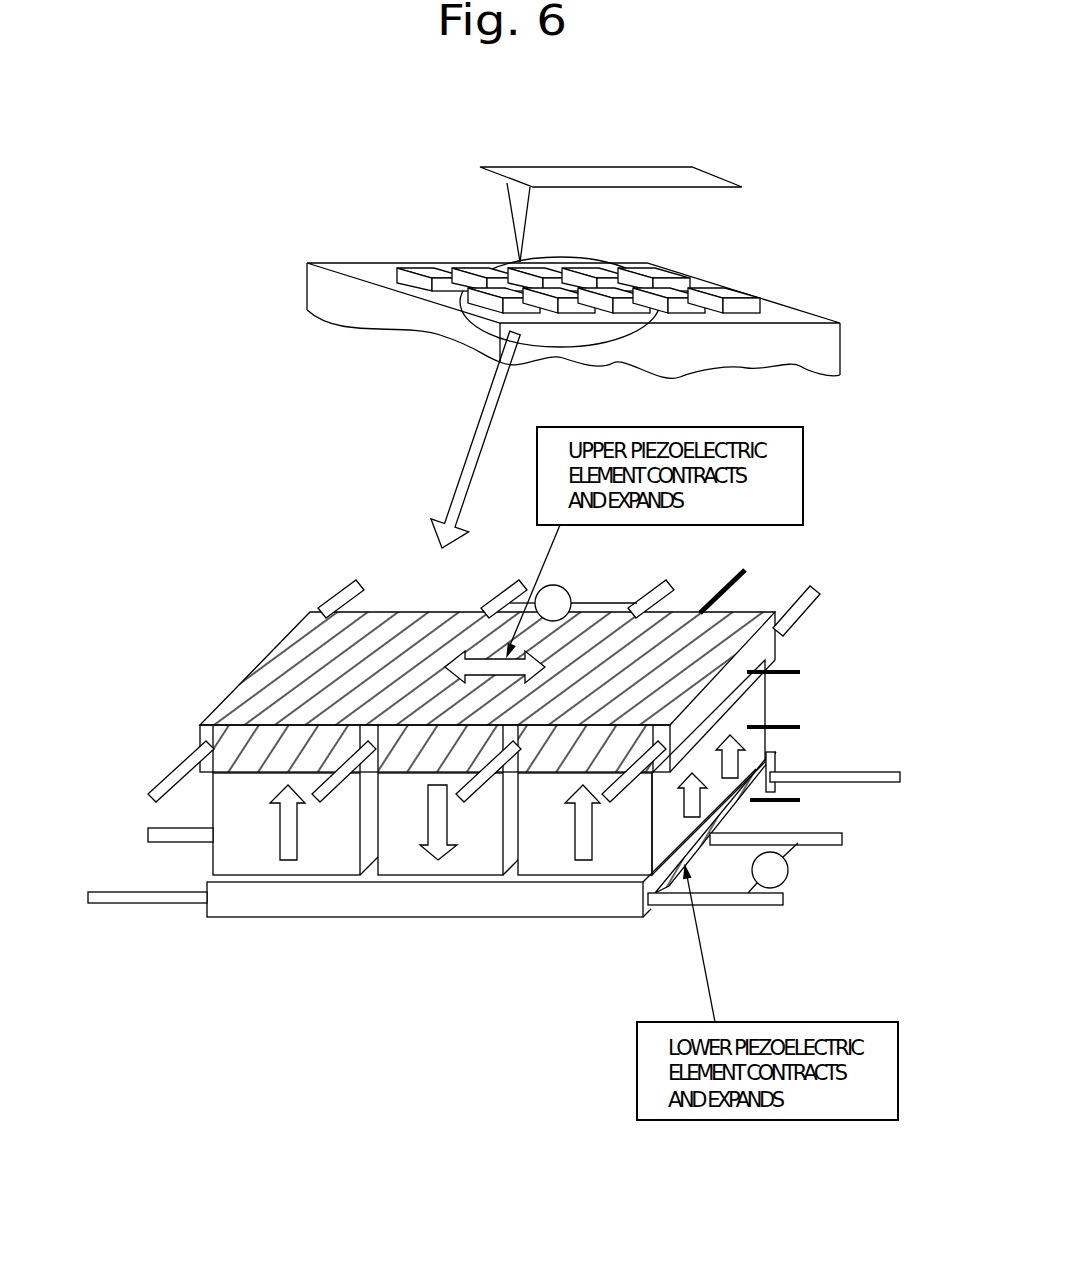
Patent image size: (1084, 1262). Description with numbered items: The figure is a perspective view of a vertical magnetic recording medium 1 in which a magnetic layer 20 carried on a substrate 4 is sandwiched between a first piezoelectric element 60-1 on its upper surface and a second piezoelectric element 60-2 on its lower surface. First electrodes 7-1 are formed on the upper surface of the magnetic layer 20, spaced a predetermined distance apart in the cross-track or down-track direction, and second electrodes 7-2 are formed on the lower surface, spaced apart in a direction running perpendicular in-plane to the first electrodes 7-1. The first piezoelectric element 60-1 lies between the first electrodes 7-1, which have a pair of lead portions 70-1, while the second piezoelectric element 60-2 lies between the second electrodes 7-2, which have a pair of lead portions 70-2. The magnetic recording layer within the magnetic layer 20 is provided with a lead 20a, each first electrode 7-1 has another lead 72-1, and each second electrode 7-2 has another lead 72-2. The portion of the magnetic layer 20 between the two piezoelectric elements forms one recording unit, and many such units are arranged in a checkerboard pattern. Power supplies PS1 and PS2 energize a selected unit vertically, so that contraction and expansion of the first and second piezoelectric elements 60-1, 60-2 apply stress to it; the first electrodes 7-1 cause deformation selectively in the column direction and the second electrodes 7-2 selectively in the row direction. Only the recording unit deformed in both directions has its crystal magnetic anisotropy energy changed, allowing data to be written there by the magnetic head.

The magnetic recording medium 1 is at (286, 287).
The substrate 4 is at (830, 348).
The magnetic layer 20 is at (738, 298).
The lead 20a is at (790, 724).
The first electrodes 7-1 is at (265, 663).
The second electrodes 7-2 is at (540, 903).
The first piezoelectric element 60-1 is at (368, 657).
The second piezoelectric element 60-2 is at (733, 815).
The lead portions 70-1 is at (348, 598).
The lead portions 70-2 is at (147, 897).
The lead 72-1 is at (743, 584).
The lead 72-2 is at (797, 791).
The power supply PS1 is at (562, 588).
The power supply PS2 is at (790, 872).